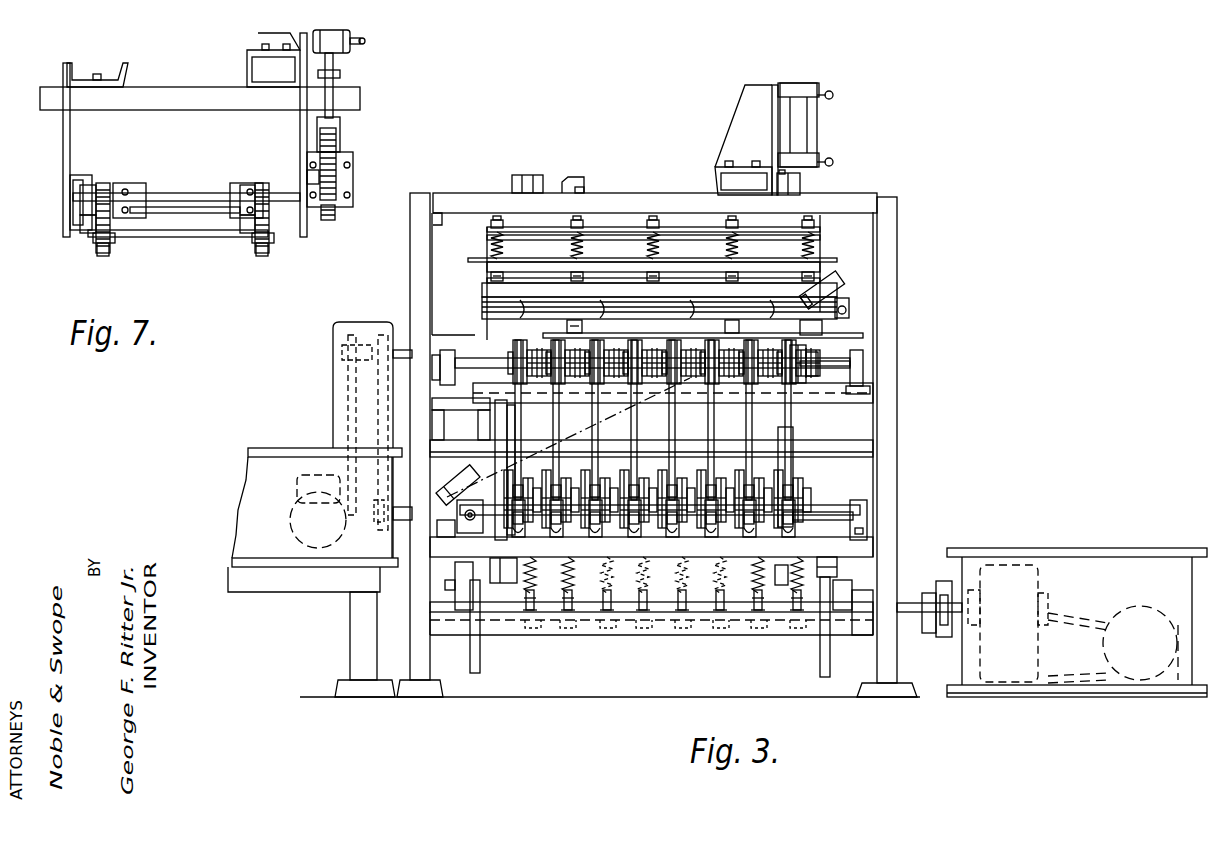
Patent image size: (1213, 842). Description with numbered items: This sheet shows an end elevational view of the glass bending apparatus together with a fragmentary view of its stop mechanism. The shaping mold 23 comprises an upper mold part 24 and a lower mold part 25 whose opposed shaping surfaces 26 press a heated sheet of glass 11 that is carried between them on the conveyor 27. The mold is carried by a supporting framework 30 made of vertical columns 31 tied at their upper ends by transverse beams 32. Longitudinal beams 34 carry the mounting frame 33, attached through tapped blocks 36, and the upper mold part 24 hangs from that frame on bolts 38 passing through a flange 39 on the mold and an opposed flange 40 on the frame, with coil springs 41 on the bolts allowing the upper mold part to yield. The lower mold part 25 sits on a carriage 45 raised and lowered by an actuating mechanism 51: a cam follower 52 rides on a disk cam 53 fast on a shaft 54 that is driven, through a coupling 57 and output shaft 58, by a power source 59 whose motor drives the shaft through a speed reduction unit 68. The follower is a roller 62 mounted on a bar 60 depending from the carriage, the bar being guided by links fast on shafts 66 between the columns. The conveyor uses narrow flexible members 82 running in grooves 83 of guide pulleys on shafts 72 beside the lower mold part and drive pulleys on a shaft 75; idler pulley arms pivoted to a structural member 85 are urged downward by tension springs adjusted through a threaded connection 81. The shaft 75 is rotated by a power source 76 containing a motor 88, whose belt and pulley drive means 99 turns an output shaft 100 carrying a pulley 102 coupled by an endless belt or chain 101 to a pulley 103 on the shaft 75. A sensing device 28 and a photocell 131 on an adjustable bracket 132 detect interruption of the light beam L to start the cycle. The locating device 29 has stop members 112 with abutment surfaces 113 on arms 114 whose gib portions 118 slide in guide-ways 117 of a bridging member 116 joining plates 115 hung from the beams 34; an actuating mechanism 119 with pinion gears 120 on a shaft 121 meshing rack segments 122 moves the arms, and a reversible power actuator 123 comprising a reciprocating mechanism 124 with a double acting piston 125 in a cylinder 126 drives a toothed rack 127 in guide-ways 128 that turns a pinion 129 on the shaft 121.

In FIG. 3, the sheet of glass 11 is at (548, 335).
In FIG. 3, the shaping mold 23 is at (474, 283).
In FIG. 3, the upper mold part 24 is at (500, 297).
In FIG. 3, the lower mold part 25 is at (748, 357).
In FIG. 3, the shaping surfaces 26 is at (484, 310).
In FIG. 3, the conveyor 27 is at (508, 341).
In FIG. 3, the sensing device 28 is at (842, 278).
In FIG. 3, the locating device 29 is at (716, 331).
In FIG. 7, the locating device 29 is at (202, 254).
In FIG. 3, the supporting framework 30 is at (402, 262).
In FIG. 3, the columns 31 is at (890, 258).
In FIG. 3, the beams 32 is at (654, 254).
In FIG. 7, the beams 32 is at (155, 95).
In FIG. 3, the mounting frame 33 is at (478, 244).
In FIG. 3, the beams 34 is at (586, 180).
In FIG. 7, the beams 34 is at (122, 72).
In FIG. 3, the tapped blocks 36 is at (520, 178).
In FIG. 3, the bolts 38 is at (580, 222).
In FIG. 3, the flange 39 is at (780, 265).
In FIG. 3, the flange 40 is at (532, 232).
In FIG. 3, the coil springs 41 is at (728, 248).
In FIG. 3, the carriage 45 is at (478, 418).
In FIG. 3, the actuating mechanism 51 is at (806, 652).
In FIG. 3, the cam follower 52 is at (851, 574).
In FIG. 3, the disk cam 53 is at (479, 656).
In FIG. 3, the shaft 54 is at (853, 622).
In FIG. 3, the coupling 57 is at (929, 622).
In FIG. 3, the output shaft 58 is at (968, 562).
In FIG. 3, the power source 59 is at (1094, 541).
In FIG. 3, the bar 60 is at (795, 470).
In FIG. 3, the roller 62 is at (465, 570).
In FIG. 3, the shafts 66 is at (858, 455).
In FIG. 3, the speed reduction unit 68 is at (1012, 665).
In FIG. 3, the shafts 72 is at (855, 387).
In FIG. 3, the shaft 75 is at (832, 512).
In FIG. 3, the power source 76 is at (300, 437).
In FIG. 3, the threaded connection 81 is at (716, 608).
In FIG. 3, the flexible members 82 is at (708, 420).
In FIG. 3, the groove 83 is at (793, 358).
In FIG. 3, the structural member 85 is at (668, 557).
In FIG. 3, the motor 88 is at (292, 515).
In FIG. 3, the belt and pulley drive means 99 is at (350, 397).
In FIG. 3, the output shaft 100 is at (400, 345).
In FIG. 3, the endless belt or chain 101 is at (386, 386).
In FIG. 3, the pulley 102 is at (378, 342).
In FIG. 3, the pulley 103 is at (380, 522).
In FIG. 7, the stop members 112 is at (96, 265).
In FIG. 7, the abutment surfaces 113 is at (108, 256).
In FIG. 7, the arms 114 is at (112, 240).
In FIG. 7, the plates 115 is at (68, 146).
In FIG. 7, the bridging member 116 is at (182, 237).
In FIG. 7, the guide-ways 117 is at (125, 185).
In FIG. 7, the gib portions 118 is at (90, 240).
In FIG. 7, the actuating mechanism 119 is at (247, 172).
In FIG. 7, the pinion gears 120 is at (103, 190).
In FIG. 7, the shaft 121 is at (165, 195).
In FIG. 7, the rack segments 122 is at (112, 220).
In FIG. 3, the reversible power actuator 123 is at (832, 123).
In FIG. 7, the reversible power actuator 123 is at (365, 81).
In FIG. 7, the reciprocating mechanism 124 is at (361, 166).
In FIG. 7, the double acting piston 125 is at (356, 50).
In FIG. 3, the cylinder 126 is at (805, 132).
In FIG. 7, the cylinder 126 is at (352, 38).
In FIG. 7, the toothed rack 127 is at (340, 150).
In FIG. 7, the guide-ways 128 is at (340, 180).
In FIG. 7, the pinion 129 is at (330, 220).
In FIG. 3, the photocell 131 is at (455, 490).
In FIG. 3, the adjustable bracket 132 is at (478, 528).
In FIG. 3, the beam L is at (583, 420).